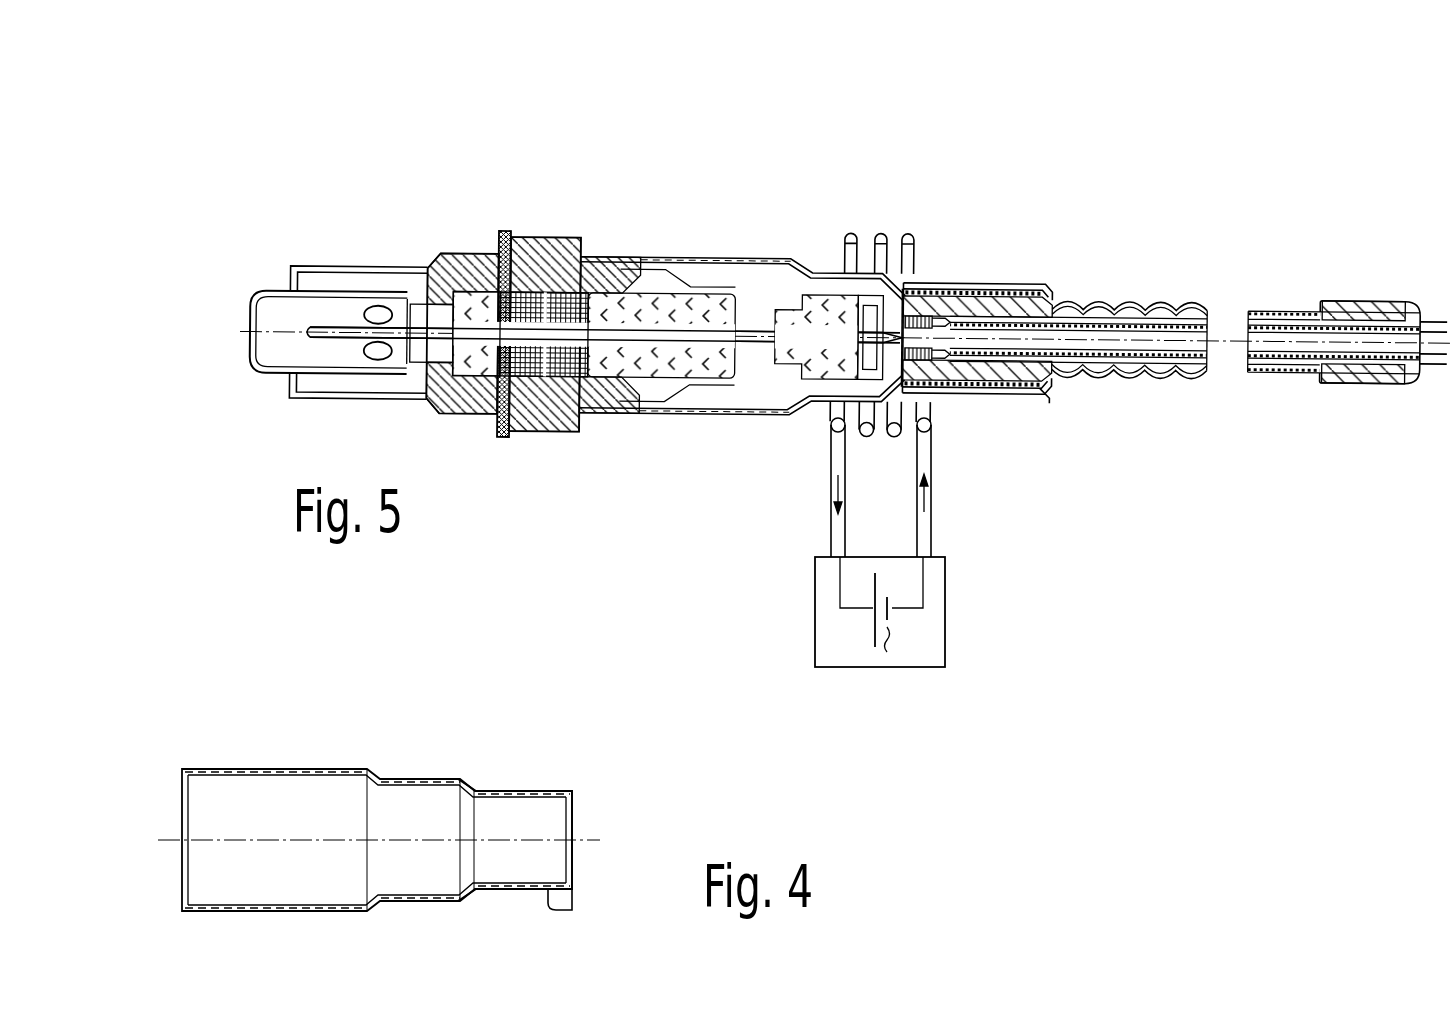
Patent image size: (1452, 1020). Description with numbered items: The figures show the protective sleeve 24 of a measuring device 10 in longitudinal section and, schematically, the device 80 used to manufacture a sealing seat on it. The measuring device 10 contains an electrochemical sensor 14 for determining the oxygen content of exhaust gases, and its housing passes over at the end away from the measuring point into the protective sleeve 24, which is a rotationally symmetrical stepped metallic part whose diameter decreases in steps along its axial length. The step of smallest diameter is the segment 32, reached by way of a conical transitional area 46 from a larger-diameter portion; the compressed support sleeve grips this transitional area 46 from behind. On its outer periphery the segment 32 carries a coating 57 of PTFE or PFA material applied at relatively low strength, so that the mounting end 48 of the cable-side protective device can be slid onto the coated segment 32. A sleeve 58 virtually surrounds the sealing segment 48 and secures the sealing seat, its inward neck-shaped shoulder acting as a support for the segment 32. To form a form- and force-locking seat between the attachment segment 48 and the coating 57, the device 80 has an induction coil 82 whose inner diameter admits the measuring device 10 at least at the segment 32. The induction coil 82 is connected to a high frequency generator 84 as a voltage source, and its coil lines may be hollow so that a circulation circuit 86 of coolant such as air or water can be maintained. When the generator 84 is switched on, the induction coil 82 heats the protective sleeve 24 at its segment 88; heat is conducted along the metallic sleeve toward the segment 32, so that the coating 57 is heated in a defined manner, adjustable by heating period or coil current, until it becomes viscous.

In FIG. 5, the measuring device 10 is at (721, 135).
In FIG. 5, the electrochemical sensor 14 is at (456, 205).
In FIG. 5, the protective sleeve 24 is at (697, 418).
In FIG. 4, the protective sleeve 24 is at (369, 746).
In FIG. 5, the segment 32 is at (982, 287).
In FIG. 4, the segment 32 is at (548, 793).
In FIG. 4, the transitional area 46 is at (466, 781).
In FIG. 5, the mounting end 48 is at (1022, 292).
In FIG. 5, the coating 57 is at (1013, 397).
In FIG. 4, the coating 57 is at (558, 906).
In FIG. 5, the sleeve 58 is at (948, 285).
In FIG. 5, the device 80 is at (949, 675).
In FIG. 5, the induction coil 82 is at (917, 288).
In FIG. 5, the high frequency generator 84 is at (916, 668).
In FIG. 5, the circulation circuit 86 is at (832, 493).
In FIG. 5, the segment 88 is at (830, 270).